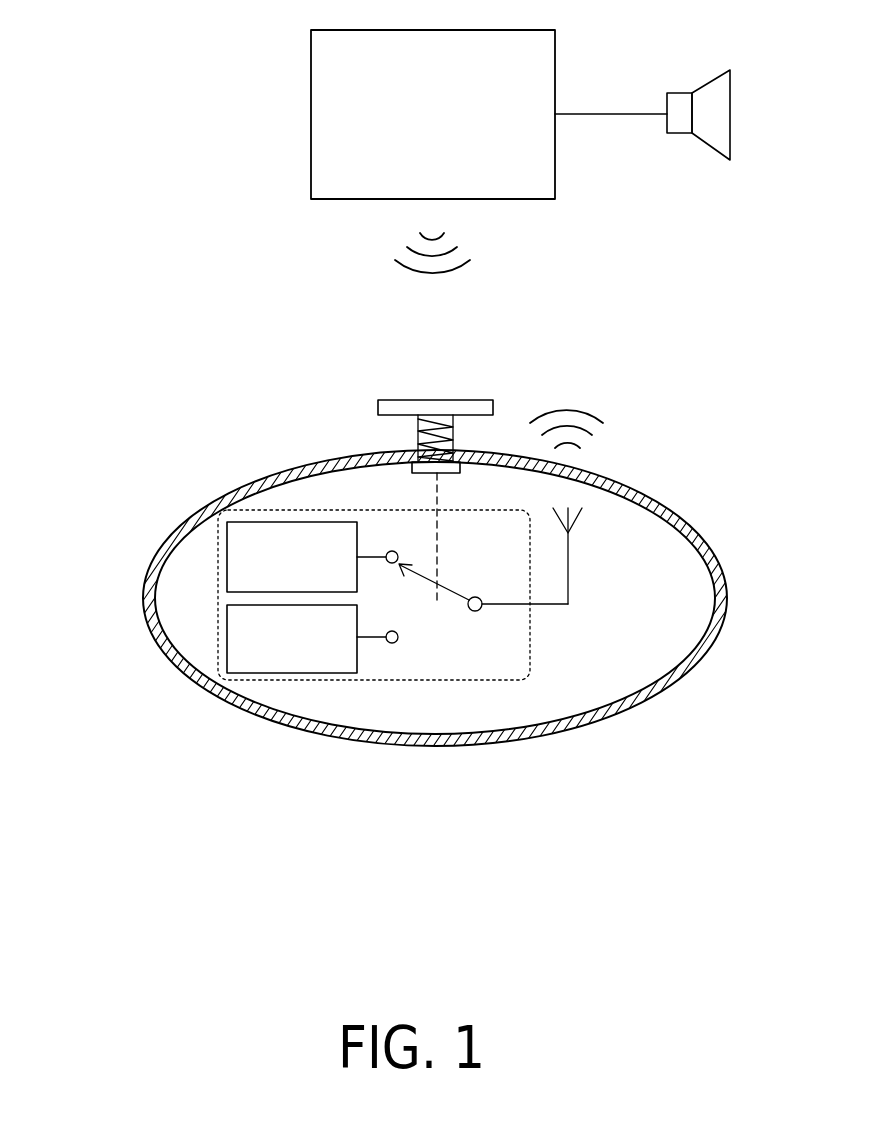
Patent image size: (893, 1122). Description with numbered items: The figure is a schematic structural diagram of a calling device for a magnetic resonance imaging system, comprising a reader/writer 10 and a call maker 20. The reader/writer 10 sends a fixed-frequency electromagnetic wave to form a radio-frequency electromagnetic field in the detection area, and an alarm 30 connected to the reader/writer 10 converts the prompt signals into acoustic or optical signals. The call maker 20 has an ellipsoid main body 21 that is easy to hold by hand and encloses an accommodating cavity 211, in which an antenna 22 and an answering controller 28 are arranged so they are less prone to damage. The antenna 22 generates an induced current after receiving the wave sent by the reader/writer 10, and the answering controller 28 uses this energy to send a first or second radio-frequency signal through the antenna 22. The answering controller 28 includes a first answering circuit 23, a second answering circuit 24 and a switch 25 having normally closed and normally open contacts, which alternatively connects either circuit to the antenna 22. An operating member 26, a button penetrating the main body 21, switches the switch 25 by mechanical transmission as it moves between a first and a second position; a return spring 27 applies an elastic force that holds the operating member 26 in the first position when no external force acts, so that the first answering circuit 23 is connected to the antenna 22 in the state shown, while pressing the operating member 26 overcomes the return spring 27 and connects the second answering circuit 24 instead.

The reader/writer 10 is at (450, 130).
The alarm 30 is at (713, 95).
The call maker 20 is at (292, 412).
The main body 21 is at (623, 490).
The accommodating cavity 211 is at (655, 657).
The antenna 22 is at (568, 548).
The first answering circuit 23 is at (333, 569).
The second answering circuit 24 is at (333, 652).
The switch 25 is at (434, 638).
The operating member 26 is at (450, 407).
The return spring 27 is at (413, 443).
The answering controller 28 is at (277, 508).